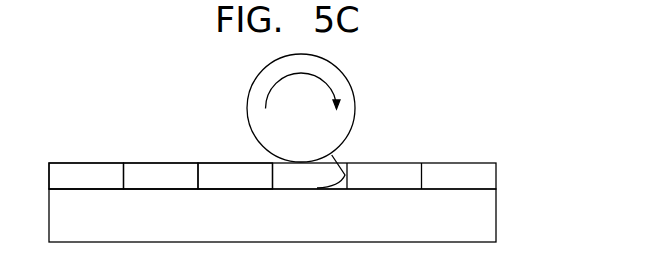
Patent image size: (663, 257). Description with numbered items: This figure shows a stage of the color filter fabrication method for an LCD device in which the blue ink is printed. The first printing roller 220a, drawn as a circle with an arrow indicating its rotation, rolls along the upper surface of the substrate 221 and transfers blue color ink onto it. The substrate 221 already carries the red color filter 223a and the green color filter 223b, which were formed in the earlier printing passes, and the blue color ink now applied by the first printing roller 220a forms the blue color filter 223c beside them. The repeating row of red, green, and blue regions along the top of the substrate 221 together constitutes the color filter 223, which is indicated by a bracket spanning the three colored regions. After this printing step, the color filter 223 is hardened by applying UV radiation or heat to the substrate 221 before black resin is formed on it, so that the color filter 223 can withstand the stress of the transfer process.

The first printing roller 220a is at (347, 112).
The substrate 221 is at (489, 216).
The color filter 223 is at (64, 113).
The red color filter 223a is at (75, 170).
The green color filter 223b is at (150, 170).
The blue color filter 223c is at (225, 170).